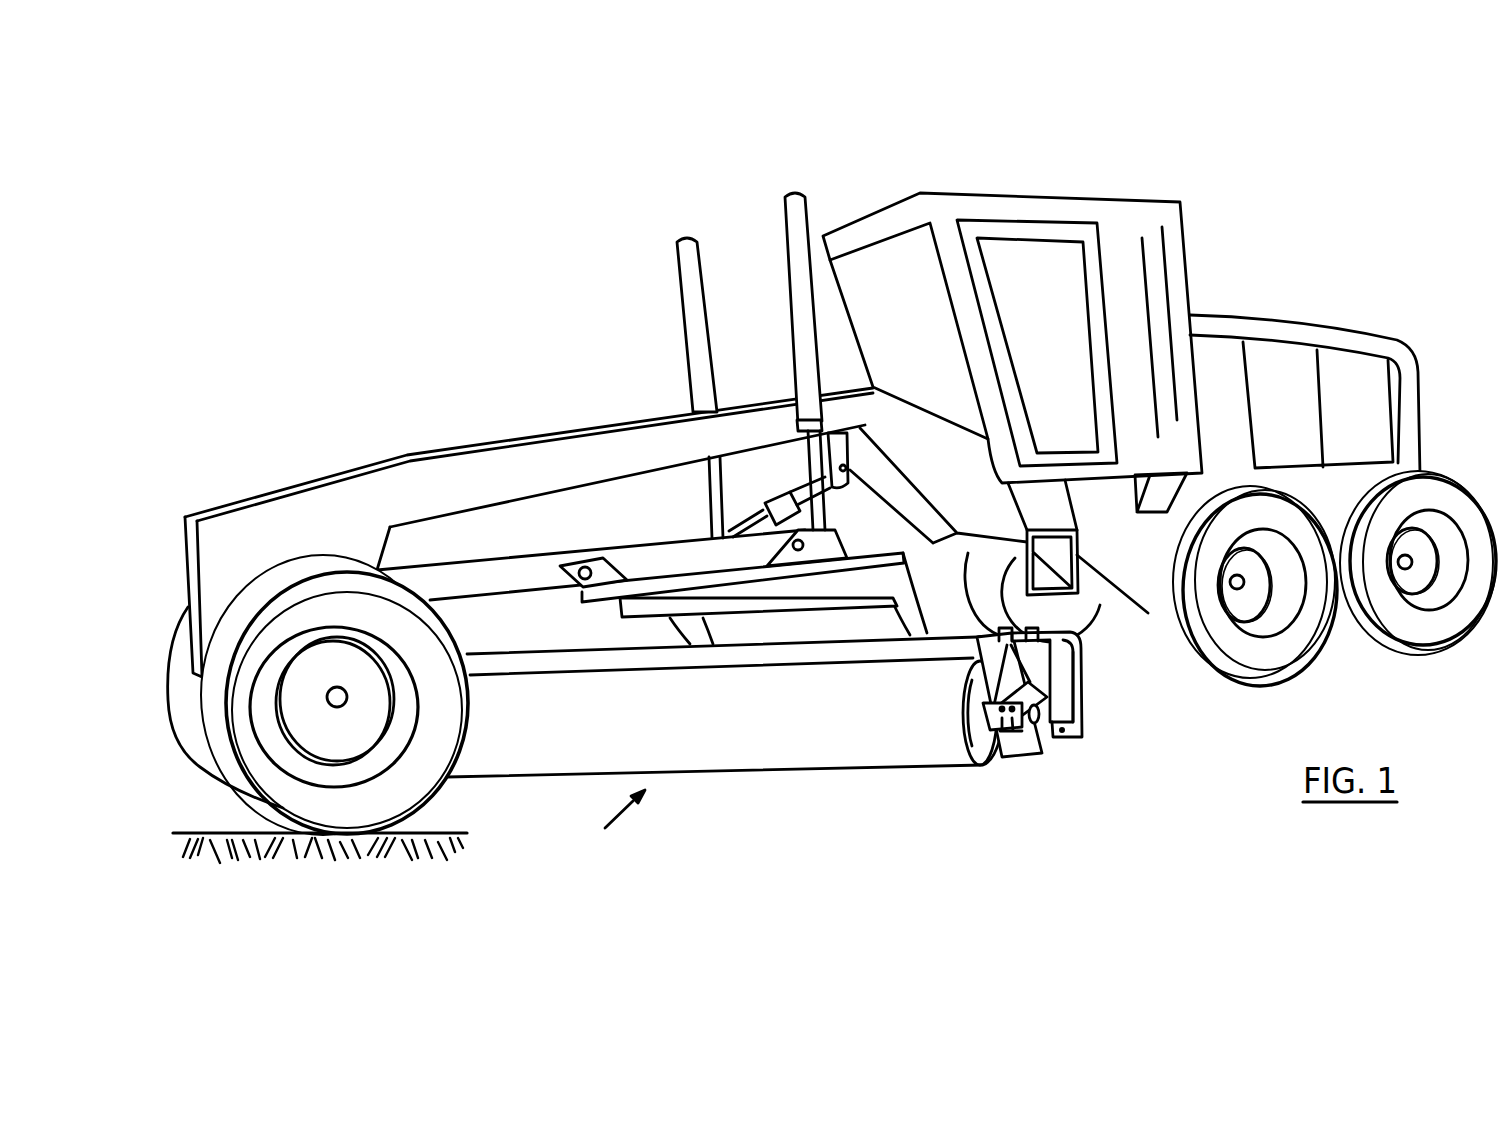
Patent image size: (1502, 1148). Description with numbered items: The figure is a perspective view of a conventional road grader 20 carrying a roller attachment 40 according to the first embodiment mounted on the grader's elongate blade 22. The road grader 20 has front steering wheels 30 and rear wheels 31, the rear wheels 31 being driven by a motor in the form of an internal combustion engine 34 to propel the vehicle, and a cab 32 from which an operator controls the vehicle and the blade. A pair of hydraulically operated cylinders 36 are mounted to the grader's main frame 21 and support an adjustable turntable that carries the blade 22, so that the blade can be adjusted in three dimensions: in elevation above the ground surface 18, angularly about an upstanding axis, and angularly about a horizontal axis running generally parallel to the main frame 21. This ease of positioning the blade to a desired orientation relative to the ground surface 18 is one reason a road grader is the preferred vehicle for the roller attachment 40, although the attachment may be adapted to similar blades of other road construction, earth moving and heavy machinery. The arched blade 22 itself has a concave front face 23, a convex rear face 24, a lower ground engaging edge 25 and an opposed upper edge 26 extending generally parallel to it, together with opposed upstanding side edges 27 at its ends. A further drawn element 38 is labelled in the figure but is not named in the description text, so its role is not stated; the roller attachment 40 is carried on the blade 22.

The ground surface 18 is at (220, 832).
The road grader 20 is at (490, 300).
The main frame 21 is at (462, 463).
The grader blade 22 is at (1115, 756).
The concave front face 23 is at (1070, 697).
The convex rear face 24 is at (1105, 682).
The lower ground engaging edge 25 is at (1066, 740).
The upper edge 26 is at (537, 652).
The side edges 27 is at (1075, 658).
The front steering wheels 30 is at (425, 795).
The rear wheels 31 is at (1378, 647).
The cab 32 is at (1185, 246).
The internal combustion engine 34 is at (1312, 300).
The hydraulically operated cylinders 36 is at (787, 265).
The drawbar 38 is at (862, 565).
The roller attachment 40 is at (606, 823).